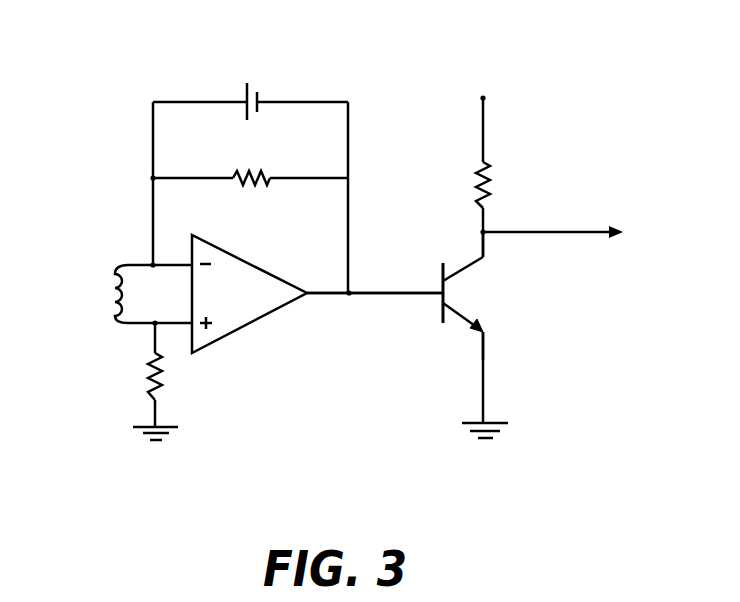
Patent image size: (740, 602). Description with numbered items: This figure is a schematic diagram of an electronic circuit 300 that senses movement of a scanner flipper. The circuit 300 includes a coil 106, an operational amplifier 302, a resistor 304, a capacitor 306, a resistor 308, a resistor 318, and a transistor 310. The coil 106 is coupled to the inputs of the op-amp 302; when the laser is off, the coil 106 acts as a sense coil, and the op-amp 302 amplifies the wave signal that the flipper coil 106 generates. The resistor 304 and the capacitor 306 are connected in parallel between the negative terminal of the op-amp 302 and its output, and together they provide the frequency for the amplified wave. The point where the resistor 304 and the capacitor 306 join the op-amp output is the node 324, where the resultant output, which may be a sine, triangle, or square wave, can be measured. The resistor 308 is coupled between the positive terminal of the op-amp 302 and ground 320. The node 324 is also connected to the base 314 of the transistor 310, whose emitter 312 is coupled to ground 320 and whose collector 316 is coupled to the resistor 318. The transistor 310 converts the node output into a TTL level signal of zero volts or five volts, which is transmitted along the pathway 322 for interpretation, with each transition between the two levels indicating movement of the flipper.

The electronic circuit 300 is at (541, 42).
The operational amplifier 302 is at (244, 259).
The resistor 304 is at (267, 178).
The capacitor 306 is at (190, 100).
The coil 106 is at (114, 303).
The resistor 308 is at (153, 380).
The ground 320 is at (157, 445).
The node 324 is at (347, 297).
The transistor 310 is at (451, 293).
The base 314 is at (441, 290).
The collector 316 is at (470, 262).
The emitter 312 is at (447, 312).
The resistor 318 is at (492, 177).
The pathway 322 is at (597, 229).